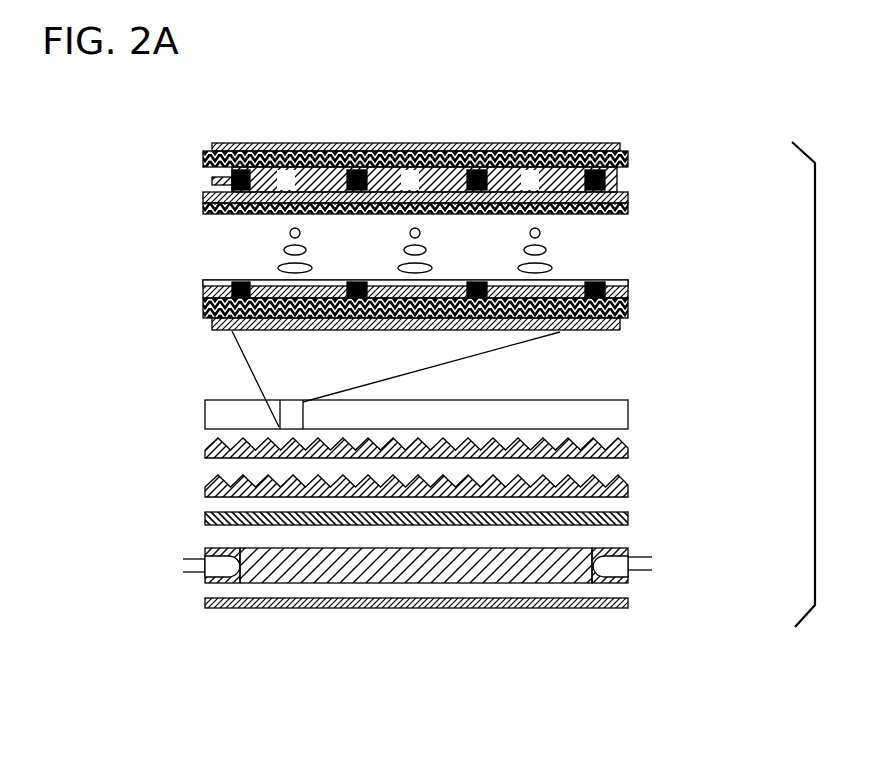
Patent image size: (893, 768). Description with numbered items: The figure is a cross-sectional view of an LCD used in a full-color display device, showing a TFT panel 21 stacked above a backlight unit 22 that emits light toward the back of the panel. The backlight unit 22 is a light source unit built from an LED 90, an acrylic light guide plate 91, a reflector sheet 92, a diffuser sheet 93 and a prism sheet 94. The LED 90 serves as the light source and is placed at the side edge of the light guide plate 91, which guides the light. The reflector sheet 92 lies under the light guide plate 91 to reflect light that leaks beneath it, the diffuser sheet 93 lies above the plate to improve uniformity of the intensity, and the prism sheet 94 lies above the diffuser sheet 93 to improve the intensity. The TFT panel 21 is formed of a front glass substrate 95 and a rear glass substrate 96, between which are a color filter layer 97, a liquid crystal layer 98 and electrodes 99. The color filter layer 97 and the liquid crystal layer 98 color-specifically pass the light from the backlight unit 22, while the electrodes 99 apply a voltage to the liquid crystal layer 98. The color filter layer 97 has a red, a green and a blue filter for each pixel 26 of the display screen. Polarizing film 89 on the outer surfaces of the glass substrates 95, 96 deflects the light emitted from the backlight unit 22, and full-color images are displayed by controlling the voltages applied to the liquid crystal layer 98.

The polarizing film 89 is at (618, 143).
The front glass substrate 95 is at (628, 160).
The color filter layer 97 is at (622, 181).
The electrodes 99 is at (628, 206).
The liquid crystal layer 98 is at (630, 215).
The rear glass substrate 96 is at (628, 309).
The TFT panel 21 is at (607, 397).
The pixel 26 is at (265, 403).
The prism sheet 94 is at (628, 488).
The diffuser sheet 93 is at (628, 518).
The LED 90 is at (214, 550).
The acrylic light guide plate 91 is at (628, 580).
The reflector sheet 92 is at (628, 606).
The backlight unit 22 is at (146, 443).